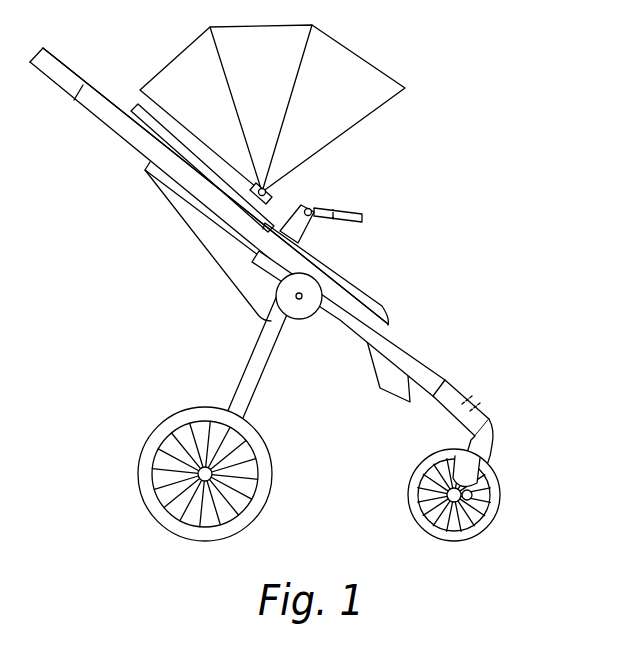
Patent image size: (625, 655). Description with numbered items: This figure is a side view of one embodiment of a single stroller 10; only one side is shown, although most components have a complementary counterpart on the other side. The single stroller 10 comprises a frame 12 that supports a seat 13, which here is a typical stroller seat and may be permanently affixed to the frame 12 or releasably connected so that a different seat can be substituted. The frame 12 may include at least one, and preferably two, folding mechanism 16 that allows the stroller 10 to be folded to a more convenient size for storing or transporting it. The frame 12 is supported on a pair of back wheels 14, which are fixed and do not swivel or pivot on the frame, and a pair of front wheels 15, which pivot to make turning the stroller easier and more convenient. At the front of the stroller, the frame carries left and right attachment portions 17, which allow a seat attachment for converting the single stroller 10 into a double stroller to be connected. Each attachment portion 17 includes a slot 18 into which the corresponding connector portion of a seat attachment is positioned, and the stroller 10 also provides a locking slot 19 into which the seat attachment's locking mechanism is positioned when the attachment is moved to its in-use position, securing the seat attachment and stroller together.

The single stroller 10 is at (510, 123).
The frame 12 is at (193, 188).
The seat 13 is at (208, 252).
The back wheels 14 is at (140, 492).
The front wheels 15 is at (493, 482).
The folding mechanism 16 is at (352, 298).
The attachment portion 17 is at (450, 383).
The slot 18 is at (455, 426).
The locking slot 19 is at (493, 428).